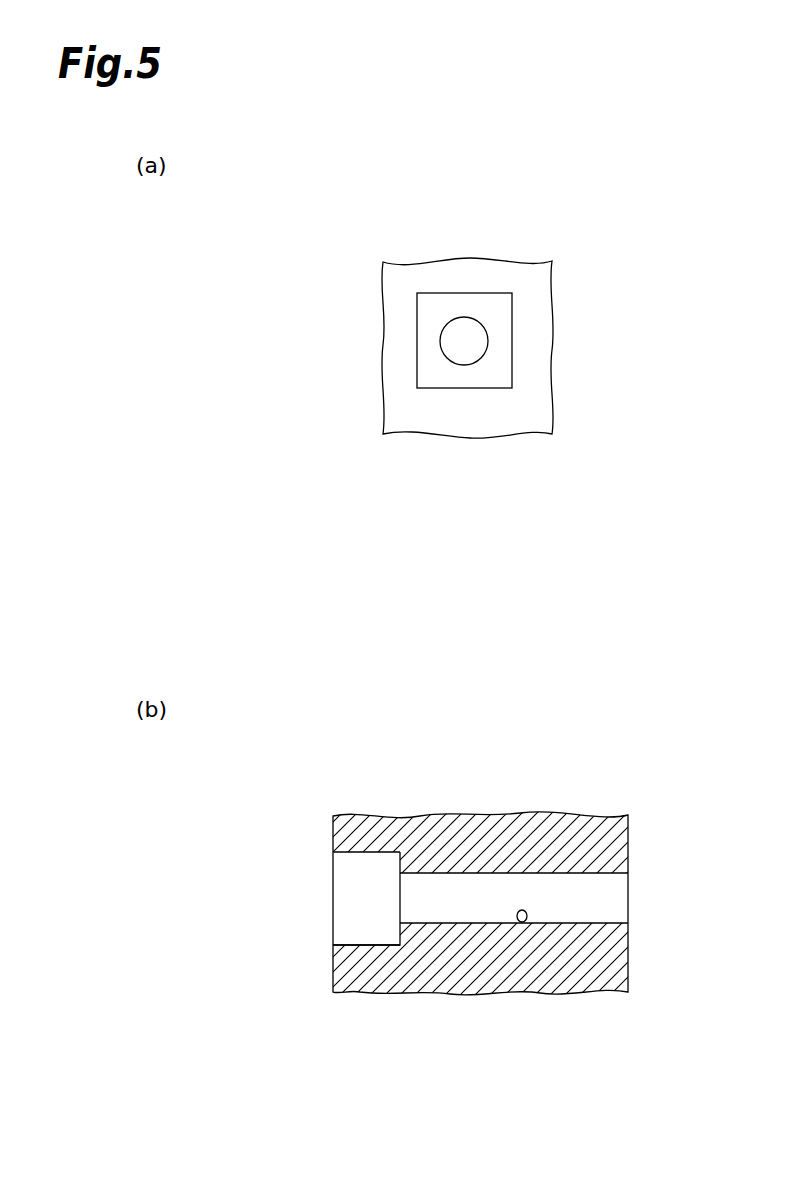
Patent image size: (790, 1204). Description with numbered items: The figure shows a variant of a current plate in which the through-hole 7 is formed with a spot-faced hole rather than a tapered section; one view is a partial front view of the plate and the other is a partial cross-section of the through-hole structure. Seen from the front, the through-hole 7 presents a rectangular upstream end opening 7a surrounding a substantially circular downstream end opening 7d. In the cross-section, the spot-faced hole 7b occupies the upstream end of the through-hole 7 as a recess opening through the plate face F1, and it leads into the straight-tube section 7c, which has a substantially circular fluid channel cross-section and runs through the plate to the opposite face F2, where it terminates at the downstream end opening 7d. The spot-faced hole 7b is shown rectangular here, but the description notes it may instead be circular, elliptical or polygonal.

The through-hole 7 is at (482, 278).
The rectangular upstream end opening 7a is at (417, 355).
The spot-faced hole 7b is at (366, 945).
The straight-tube section 7c is at (521, 923).
The downstream end opening 7d is at (492, 336).
The first surface F1 is at (536, 302).
The second surface F2 is at (628, 832).